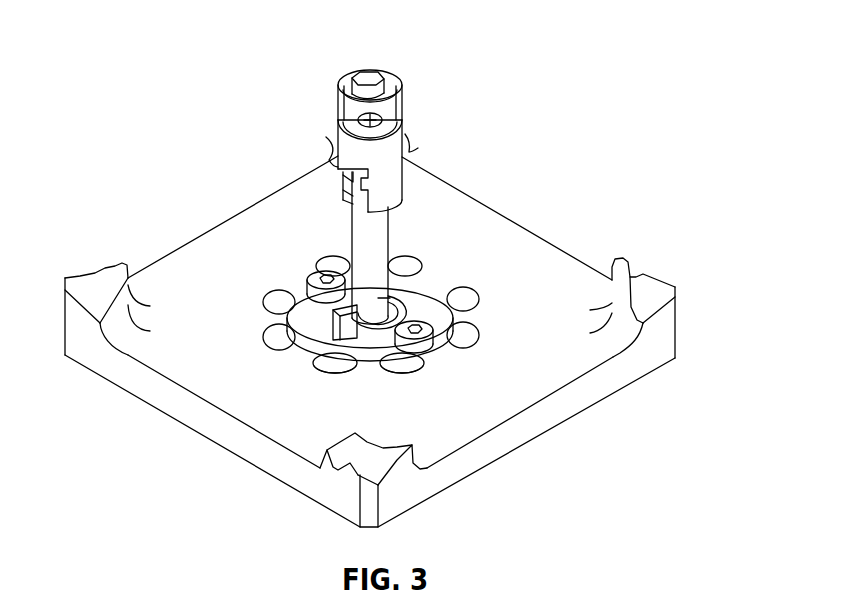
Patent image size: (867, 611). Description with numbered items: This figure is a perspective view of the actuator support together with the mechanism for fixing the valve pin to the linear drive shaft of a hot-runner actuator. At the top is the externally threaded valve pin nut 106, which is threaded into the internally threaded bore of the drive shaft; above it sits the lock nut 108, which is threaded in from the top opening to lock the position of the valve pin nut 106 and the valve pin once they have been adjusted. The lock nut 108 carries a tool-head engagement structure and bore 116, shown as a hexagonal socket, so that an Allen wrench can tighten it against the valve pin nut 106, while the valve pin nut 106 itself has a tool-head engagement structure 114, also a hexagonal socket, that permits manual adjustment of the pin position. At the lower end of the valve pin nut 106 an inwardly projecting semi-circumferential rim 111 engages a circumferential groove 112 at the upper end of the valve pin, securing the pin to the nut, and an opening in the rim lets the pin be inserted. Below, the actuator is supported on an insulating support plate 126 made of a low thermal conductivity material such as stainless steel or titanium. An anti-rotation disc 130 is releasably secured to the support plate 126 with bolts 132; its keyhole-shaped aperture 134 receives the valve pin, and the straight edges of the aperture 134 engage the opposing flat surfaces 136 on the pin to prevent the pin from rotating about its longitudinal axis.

The valve pin nut 106 is at (388, 153).
The lock nut 108 is at (343, 112).
The inwardly projecting semi-circumferential rim 111 is at (353, 210).
The circumferential groove 112 is at (347, 183).
The tool-head engagement structure 114 is at (368, 118).
The tool-head engagement structure and bore 116 is at (385, 82).
The insulating support plate 126 is at (527, 425).
The anti-rotation disc 130 is at (290, 298).
The bolts 132 is at (315, 281).
The aperture 134 is at (345, 312).
The flat surfaces 136 is at (403, 302).